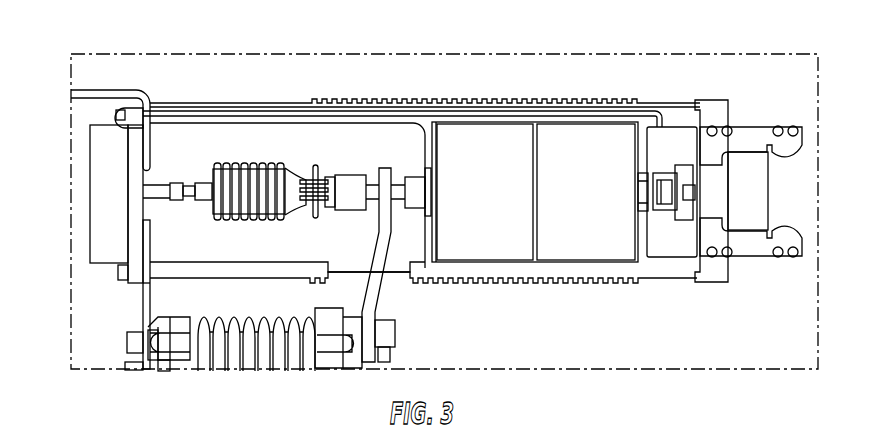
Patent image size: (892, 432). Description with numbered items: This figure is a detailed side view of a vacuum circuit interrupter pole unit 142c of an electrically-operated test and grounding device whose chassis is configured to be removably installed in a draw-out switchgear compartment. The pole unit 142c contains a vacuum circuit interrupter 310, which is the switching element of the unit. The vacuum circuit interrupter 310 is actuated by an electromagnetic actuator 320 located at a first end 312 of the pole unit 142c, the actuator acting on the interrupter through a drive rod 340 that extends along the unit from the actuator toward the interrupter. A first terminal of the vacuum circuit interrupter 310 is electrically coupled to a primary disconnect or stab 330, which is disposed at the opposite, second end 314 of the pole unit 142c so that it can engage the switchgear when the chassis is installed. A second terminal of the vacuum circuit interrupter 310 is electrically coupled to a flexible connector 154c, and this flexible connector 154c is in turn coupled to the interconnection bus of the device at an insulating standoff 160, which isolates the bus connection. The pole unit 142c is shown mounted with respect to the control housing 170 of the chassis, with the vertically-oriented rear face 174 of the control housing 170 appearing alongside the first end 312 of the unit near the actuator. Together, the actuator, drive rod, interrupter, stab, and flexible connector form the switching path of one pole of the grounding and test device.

The control housing 170 is at (90, 92).
The first end 312 is at (104, 120).
The pole unit 142c is at (566, 103).
The electromagnetic actuator 320 is at (82, 201).
The rear face 174 is at (148, 292).
The drive rod 340 is at (152, 185).
The flexible connector 154c is at (370, 297).
The vacuum circuit interrupter 310 is at (513, 148).
The second end 314 is at (733, 267).
The primary disconnect or stab 330 is at (792, 153).
The insulating standoff 160 is at (248, 356).